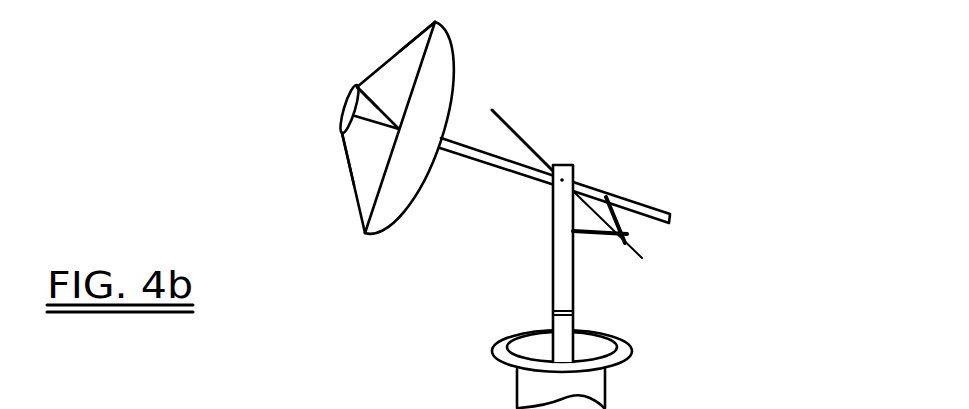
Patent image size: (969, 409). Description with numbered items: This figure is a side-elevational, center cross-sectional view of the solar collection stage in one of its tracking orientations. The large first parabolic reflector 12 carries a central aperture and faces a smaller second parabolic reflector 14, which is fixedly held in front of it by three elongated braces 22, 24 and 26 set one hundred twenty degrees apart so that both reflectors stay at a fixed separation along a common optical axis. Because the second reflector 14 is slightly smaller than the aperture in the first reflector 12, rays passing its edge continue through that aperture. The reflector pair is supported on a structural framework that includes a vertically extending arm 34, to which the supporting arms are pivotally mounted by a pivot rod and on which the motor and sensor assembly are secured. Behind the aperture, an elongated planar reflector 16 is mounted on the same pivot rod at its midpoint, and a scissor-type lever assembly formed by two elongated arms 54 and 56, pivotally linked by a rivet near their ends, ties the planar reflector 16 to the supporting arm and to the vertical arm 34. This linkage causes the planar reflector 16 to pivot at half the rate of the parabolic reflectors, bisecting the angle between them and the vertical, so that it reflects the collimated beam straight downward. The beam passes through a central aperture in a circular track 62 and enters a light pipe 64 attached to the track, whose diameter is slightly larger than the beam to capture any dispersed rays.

The first parabolic reflector 12 is at (455, 62).
The second parabolic reflector 14 is at (345, 125).
The planar reflector 16 is at (507, 122).
The elongated brace 22 is at (407, 47).
The elongated brace 24 is at (358, 86).
The elongated brace 26 is at (351, 186).
The vertically extending arm 34 is at (553, 260).
The elongated arm of lever assembly 54 is at (615, 203).
The elongated arm of lever assembly 56 is at (600, 236).
The circular track 62 is at (627, 350).
The light pipe 64 is at (607, 387).